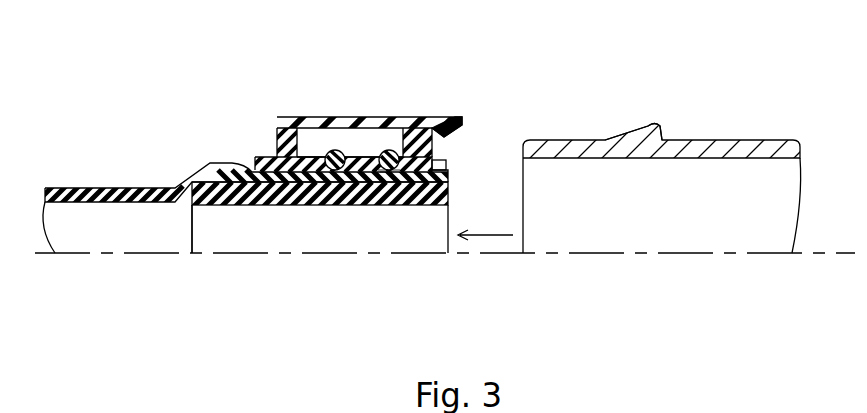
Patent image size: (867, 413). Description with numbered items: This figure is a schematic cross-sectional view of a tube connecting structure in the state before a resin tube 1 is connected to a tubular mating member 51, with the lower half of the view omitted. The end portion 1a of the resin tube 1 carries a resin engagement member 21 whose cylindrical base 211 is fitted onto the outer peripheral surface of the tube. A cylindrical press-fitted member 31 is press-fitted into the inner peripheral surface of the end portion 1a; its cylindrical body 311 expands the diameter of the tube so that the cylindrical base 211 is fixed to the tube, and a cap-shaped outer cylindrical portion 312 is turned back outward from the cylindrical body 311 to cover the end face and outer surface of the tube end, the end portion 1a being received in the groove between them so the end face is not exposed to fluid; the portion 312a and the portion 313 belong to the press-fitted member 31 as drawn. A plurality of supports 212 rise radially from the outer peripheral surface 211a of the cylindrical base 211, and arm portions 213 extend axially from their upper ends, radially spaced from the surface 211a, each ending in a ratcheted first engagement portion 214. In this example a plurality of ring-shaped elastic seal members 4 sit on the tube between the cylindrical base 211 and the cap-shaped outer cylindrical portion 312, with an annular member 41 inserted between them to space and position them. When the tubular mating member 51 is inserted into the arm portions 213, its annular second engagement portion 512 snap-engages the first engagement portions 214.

The resin tube 1 is at (88, 187).
The end portion of the resin tube 1a is at (385, 178).
The engagement member 21 is at (369, 100).
The cylindrical base 211 is at (273, 162).
The outer peripheral surface of the cylindrical base 211a is at (313, 153).
The supports 212 is at (282, 117).
The arm portions 213 is at (403, 117).
The first engagement portion 214 is at (462, 121).
The press-fitted member 31 is at (285, 207).
The cylindrical body 311 is at (345, 186).
The cap-shaped outer cylindrical portion 312 is at (440, 164).
The hole of insulating plate 312a is at (412, 152).
The side portion of base block 313 is at (222, 197).
The ring-shaped elastic seal member 4 is at (336, 150).
The annular member 41 is at (380, 150).
The tubular mating member 51 is at (737, 148).
The second engagement portion 512 is at (643, 123).